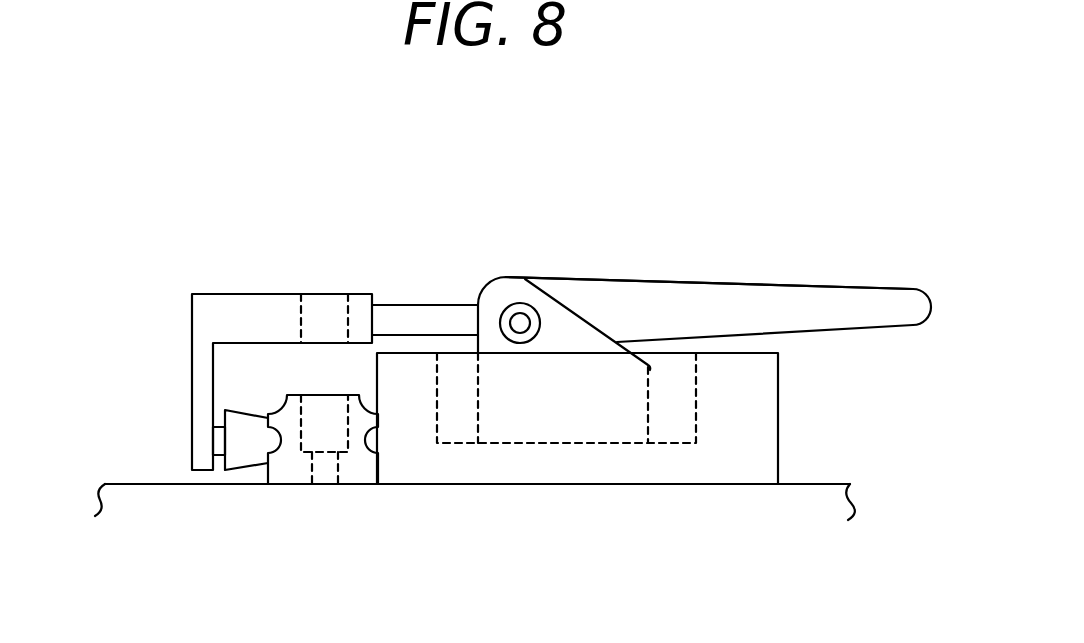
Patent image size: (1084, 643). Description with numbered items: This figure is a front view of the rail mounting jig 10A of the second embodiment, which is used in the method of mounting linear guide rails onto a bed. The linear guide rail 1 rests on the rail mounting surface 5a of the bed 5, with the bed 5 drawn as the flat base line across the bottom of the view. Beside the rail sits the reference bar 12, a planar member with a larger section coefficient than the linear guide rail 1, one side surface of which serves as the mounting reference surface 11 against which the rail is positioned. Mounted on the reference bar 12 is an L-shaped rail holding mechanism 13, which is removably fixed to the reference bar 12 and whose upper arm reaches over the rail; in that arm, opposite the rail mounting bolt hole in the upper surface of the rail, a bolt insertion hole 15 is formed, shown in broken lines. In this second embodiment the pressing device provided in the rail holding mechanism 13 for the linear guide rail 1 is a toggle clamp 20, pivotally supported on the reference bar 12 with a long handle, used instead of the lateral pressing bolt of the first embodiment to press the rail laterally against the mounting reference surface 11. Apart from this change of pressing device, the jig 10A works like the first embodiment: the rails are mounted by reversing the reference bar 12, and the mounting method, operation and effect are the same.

The rail mounting jig 10A is at (549, 297).
The linear guide rail 1 is at (354, 463).
The bed 5 is at (495, 468).
The rail mounting surface 5a is at (130, 482).
The mounting reference surface 11 is at (377, 367).
The reference bar 12 is at (758, 425).
The rail holding mechanism 13 is at (232, 293).
The bolt insertion hole 15 is at (325, 301).
The toggle clamp 20 is at (830, 300).